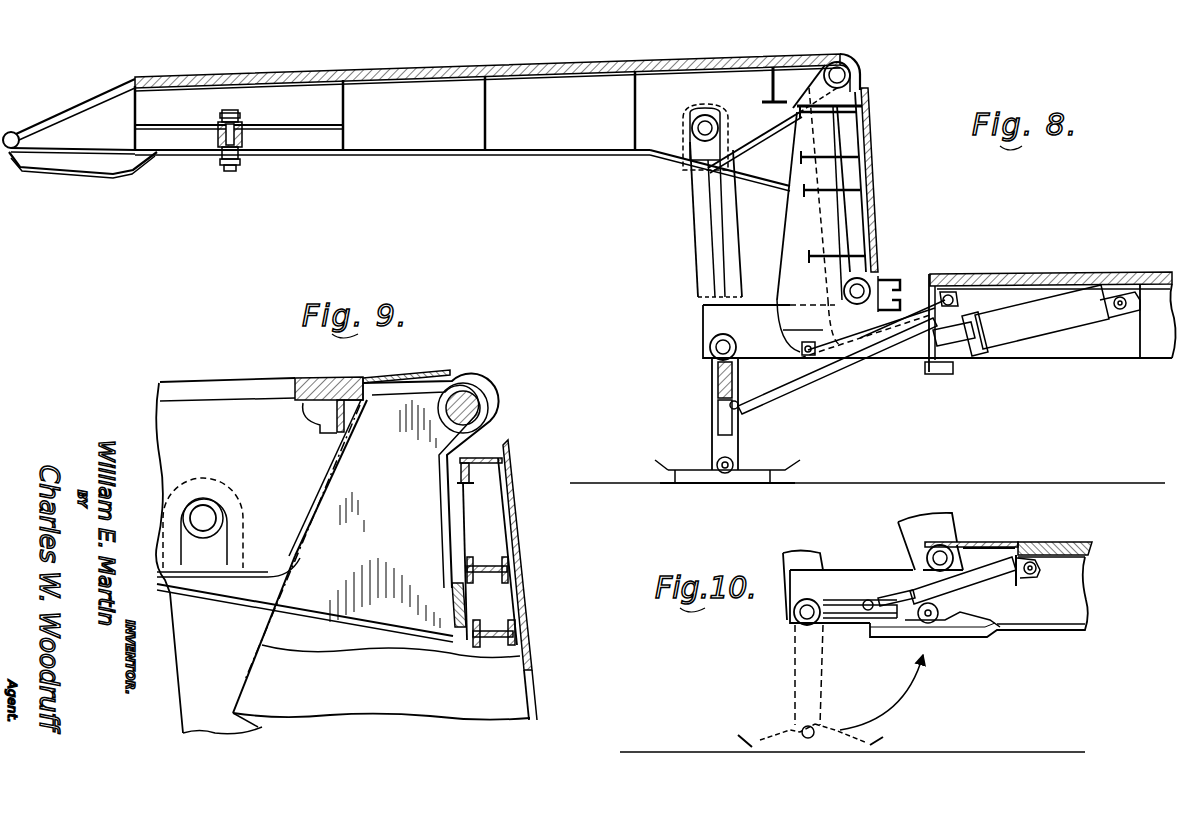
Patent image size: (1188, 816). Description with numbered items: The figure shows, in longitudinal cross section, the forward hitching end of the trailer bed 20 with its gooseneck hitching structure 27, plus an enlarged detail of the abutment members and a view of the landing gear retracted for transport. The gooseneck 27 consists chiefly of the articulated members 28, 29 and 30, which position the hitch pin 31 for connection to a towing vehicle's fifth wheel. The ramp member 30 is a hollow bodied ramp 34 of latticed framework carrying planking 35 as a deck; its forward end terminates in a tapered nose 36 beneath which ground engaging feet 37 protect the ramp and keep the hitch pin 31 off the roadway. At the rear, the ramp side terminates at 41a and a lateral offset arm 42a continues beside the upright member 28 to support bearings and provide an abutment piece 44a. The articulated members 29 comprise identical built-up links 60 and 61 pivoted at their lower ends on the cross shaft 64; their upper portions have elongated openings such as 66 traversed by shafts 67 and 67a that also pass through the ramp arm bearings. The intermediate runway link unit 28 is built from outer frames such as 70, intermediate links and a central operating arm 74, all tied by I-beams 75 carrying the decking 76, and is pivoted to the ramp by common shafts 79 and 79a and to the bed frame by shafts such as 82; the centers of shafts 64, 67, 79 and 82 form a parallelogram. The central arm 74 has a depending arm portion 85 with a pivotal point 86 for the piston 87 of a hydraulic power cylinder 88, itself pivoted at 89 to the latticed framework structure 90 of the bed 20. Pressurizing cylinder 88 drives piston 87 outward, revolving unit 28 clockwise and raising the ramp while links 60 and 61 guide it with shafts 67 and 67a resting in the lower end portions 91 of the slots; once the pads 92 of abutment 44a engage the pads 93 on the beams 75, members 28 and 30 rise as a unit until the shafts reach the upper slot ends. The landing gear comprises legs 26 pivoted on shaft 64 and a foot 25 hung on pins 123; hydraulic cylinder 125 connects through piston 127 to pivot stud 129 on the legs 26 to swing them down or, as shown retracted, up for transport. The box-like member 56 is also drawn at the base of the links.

In FIG. 8, the bed 20 is at (1026, 268).
In FIG. 10, the bed 20 is at (1058, 624).
In FIG. 8, the foot 25 is at (732, 487).
In FIG. 10, the foot 25 is at (955, 640).
In FIG. 8, the legs 26 is at (712, 436).
In FIG. 10, the legs 26 is at (846, 628).
In FIG. 8, the gooseneck hitching structure 27 is at (753, 46).
In FIG. 10, the gooseneck hitching structure 27 is at (803, 550).
In FIG. 8, the intermediate runway link unit 28 is at (878, 195).
In FIG. 10, the intermediate runway link unit 28 is at (960, 518).
In FIG. 8, the articulated members 29 is at (692, 265).
In FIG. 10, the articulated members 29 is at (783, 555).
In FIG. 8, the ramp member 30 is at (512, 50).
In FIG. 9, the ramp member 30 is at (226, 380).
In FIG. 8, the hitch pin 31 is at (229, 172).
In FIG. 8, the hollow bodied ramp framework 34 is at (470, 158).
In FIG. 9, the hollow bodied ramp framework 34 is at (322, 415).
In FIG. 8, the planking 35 is at (404, 72).
In FIG. 9, the planking 35 is at (325, 380).
In FIG. 8, the tapered nose 36 is at (92, 120).
In FIG. 8, the ground engaging feet 37 is at (106, 178).
In FIG. 9, the terminating end of ramp side 41a is at (345, 480).
In FIG. 9, the lateral offset arm 42a is at (385, 514).
In FIG. 9, the abutment piece 44a is at (424, 620).
In FIG. 8, the base box 56 is at (740, 356).
In FIG. 10, the base box 56 is at (836, 572).
In FIG. 8, the link 60 is at (696, 238).
In FIG. 9, the link 61 is at (228, 558).
In FIG. 8, the cross shaft 64 is at (708, 348).
In FIG. 10, the cross shaft 64 is at (795, 617).
In FIG. 8, the elongated opening 66 is at (728, 130).
In FIG. 9, the elongated opening 66 is at (230, 548).
In FIG. 8, the shaft 67 is at (700, 126).
In FIG. 9, the shaft 67a is at (210, 510).
In FIG. 9, the outer frame 70 is at (380, 720).
In FIG. 8, the central operating arm 74 is at (795, 222).
In FIG. 8, the I-beams 75 is at (858, 118).
In FIG. 9, the I-beams 75 is at (504, 475).
In FIG. 8, the decking 76 is at (868, 138).
In FIG. 9, the decking 76 is at (508, 507).
In FIG. 8, the shaft 79 is at (853, 72).
In FIG. 9, the shaft 79a is at (478, 398).
In FIG. 8, the shaft 82 is at (873, 276).
In FIG. 10, the shaft 82 is at (926, 556).
In FIG. 8, the depending arm portion 85 is at (812, 360).
In FIG. 8, the pivotal point 86 is at (820, 356).
In FIG. 8, the piston 87 is at (930, 365).
In FIG. 8, the hydraulically operated power cylinder 88 is at (1062, 330).
In FIG. 8, the pivot 89 is at (1120, 295).
In FIG. 8, the latticed framework structure 90 is at (1155, 282).
In FIG. 8, the lower end portion of slot 91 is at (700, 162).
In FIG. 9, the pad 92 is at (462, 605).
In FIG. 9, the pad 93 is at (466, 540).
In FIG. 10, the pin 123 is at (930, 624).
In FIG. 8, the hydraulically operated cylinder 125 is at (910, 300).
In FIG. 10, the hydraulically operated cylinder 125 is at (986, 584).
In FIG. 8, the piston 127 is at (748, 396).
In FIG. 10, the piston 127 is at (905, 592).
In FIG. 8, the pivot stud 129 is at (740, 410).
In FIG. 10, the pivot stud 129 is at (866, 600).